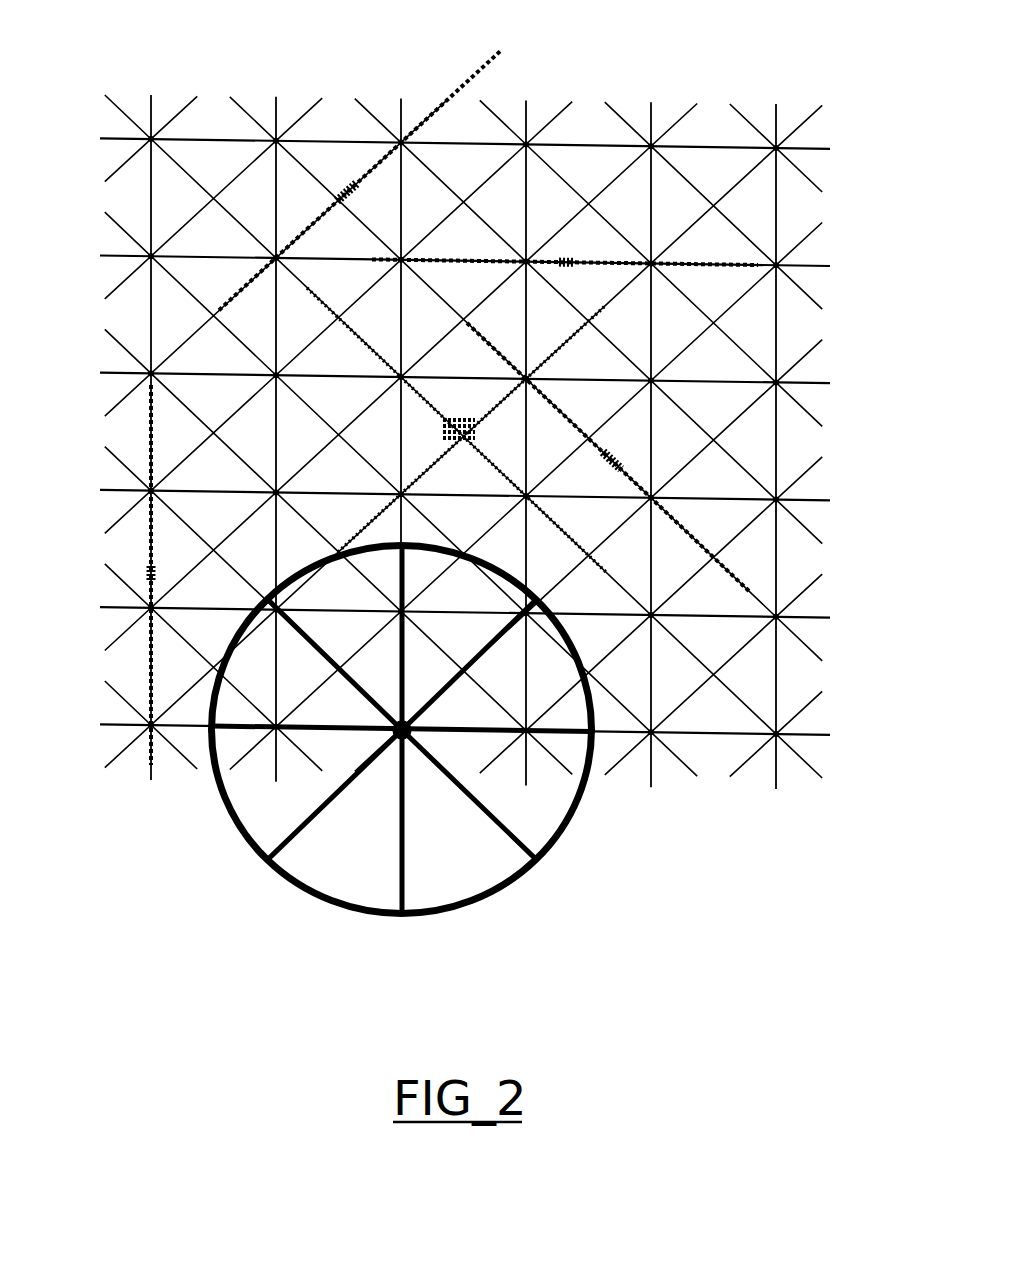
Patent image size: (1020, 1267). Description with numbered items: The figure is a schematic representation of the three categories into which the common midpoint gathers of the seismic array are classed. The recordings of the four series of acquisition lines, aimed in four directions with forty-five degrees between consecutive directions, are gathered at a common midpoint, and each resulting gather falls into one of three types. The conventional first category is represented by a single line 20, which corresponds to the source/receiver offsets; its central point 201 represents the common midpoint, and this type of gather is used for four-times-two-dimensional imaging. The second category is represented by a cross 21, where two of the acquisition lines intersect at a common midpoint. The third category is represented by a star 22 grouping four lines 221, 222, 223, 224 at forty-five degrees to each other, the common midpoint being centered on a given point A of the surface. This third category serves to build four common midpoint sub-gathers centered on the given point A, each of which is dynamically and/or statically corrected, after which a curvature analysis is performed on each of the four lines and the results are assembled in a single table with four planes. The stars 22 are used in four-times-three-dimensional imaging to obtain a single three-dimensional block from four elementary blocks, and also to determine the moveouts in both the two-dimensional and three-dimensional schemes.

The single line 20 is at (432, 108).
The central point 201 is at (690, 423).
The cross 21 is at (442, 431).
The star 22 is at (228, 842).
The first line of the star 221 is at (287, 834).
The second line of the star 222 is at (403, 877).
The third line of the star 223 is at (517, 842).
The fourth line of the star 224 is at (565, 737).
The given point A is at (390, 736).